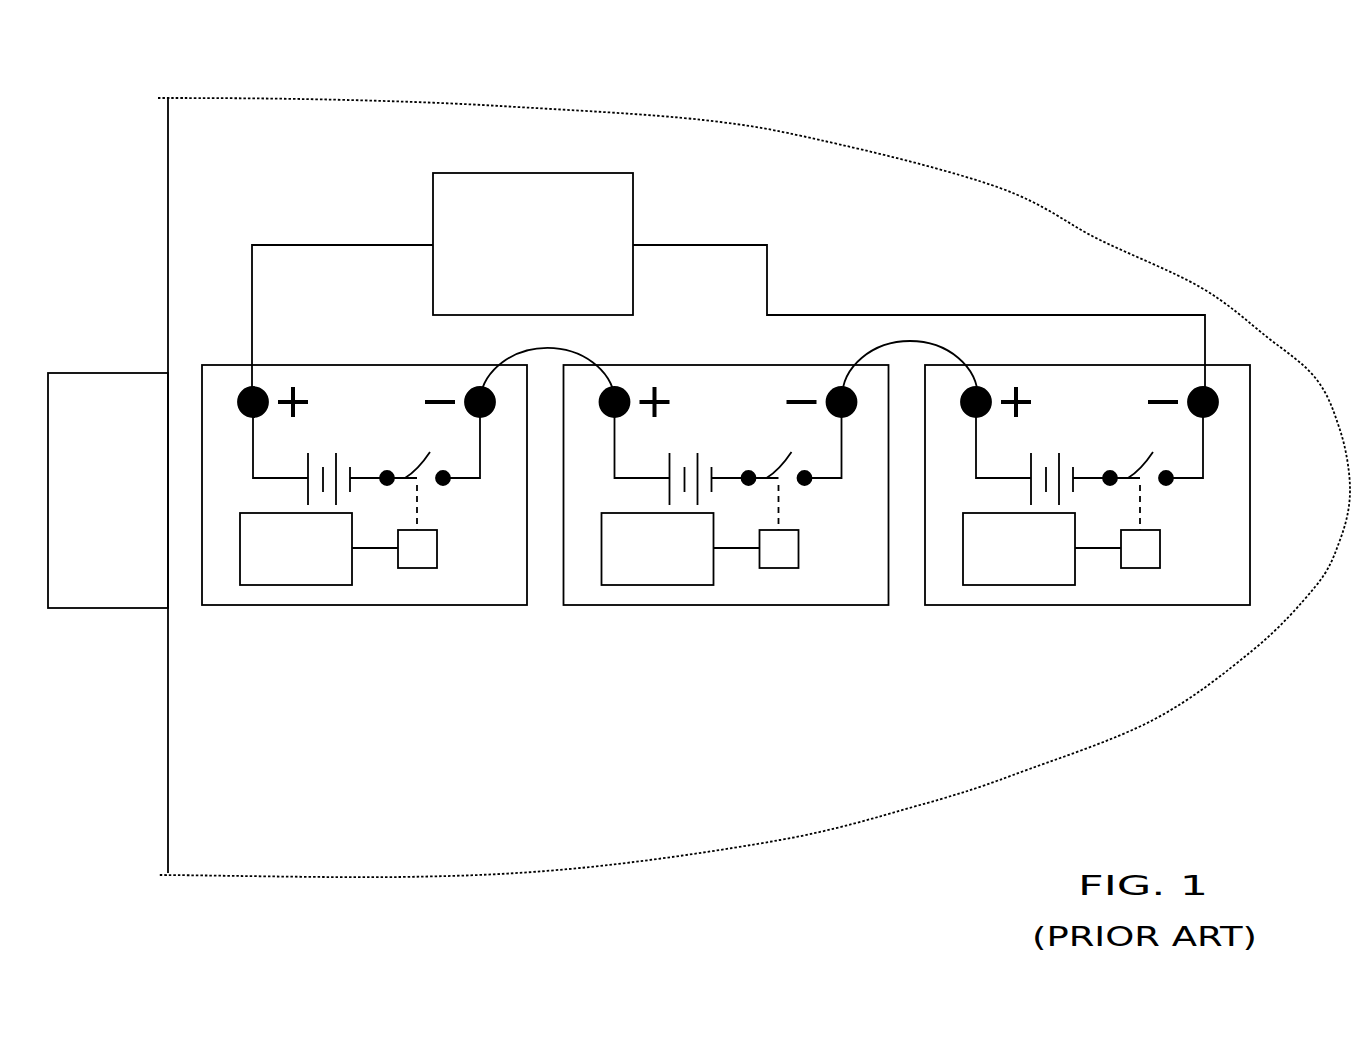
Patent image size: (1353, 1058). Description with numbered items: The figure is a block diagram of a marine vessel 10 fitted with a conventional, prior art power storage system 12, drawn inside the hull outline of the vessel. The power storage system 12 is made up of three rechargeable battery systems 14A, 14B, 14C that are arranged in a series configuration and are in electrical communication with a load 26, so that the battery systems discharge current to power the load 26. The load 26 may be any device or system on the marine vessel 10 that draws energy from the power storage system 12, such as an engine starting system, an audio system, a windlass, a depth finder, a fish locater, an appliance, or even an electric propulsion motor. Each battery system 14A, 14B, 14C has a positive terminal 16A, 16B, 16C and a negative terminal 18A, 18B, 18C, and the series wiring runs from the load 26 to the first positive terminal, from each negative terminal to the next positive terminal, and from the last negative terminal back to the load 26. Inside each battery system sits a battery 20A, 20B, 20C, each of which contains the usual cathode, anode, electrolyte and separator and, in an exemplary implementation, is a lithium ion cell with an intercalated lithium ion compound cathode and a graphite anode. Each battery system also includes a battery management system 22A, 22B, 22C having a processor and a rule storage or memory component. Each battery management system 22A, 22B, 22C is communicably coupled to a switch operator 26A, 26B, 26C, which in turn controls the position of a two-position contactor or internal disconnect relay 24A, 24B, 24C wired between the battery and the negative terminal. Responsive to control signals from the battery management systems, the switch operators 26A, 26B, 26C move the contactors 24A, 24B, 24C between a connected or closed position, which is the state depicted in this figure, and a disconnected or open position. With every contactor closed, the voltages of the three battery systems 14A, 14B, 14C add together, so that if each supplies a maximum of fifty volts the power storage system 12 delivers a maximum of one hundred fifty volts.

The marine vessel 10 is at (107, 131).
The power storage system 12 is at (884, 254).
The load 26 is at (565, 190).
The battery system 14A is at (373, 605).
The battery system 14B is at (720, 508).
The battery system 14C is at (1081, 508).
The positive terminal 16A is at (300, 380).
The positive terminal 16B is at (653, 398).
The positive terminal 16C is at (1014, 398).
The negative terminal 18A is at (440, 388).
The negative terminal 18B is at (800, 398).
The negative terminal 18C is at (1161, 398).
The battery 20A is at (338, 448).
The battery 20B is at (710, 445).
The battery 20C is at (1071, 445).
The battery management system 22A is at (283, 585).
The battery management system 22B is at (633, 593).
The battery management system 22C is at (994, 593).
The two-position contactor 24A is at (402, 476).
The two-position contactor 24B is at (764, 476).
The two-position contactor 24C is at (1125, 476).
The switch operator 26A is at (437, 541).
The switch operator 26B is at (789, 563).
The switch operator 26C is at (1150, 563).